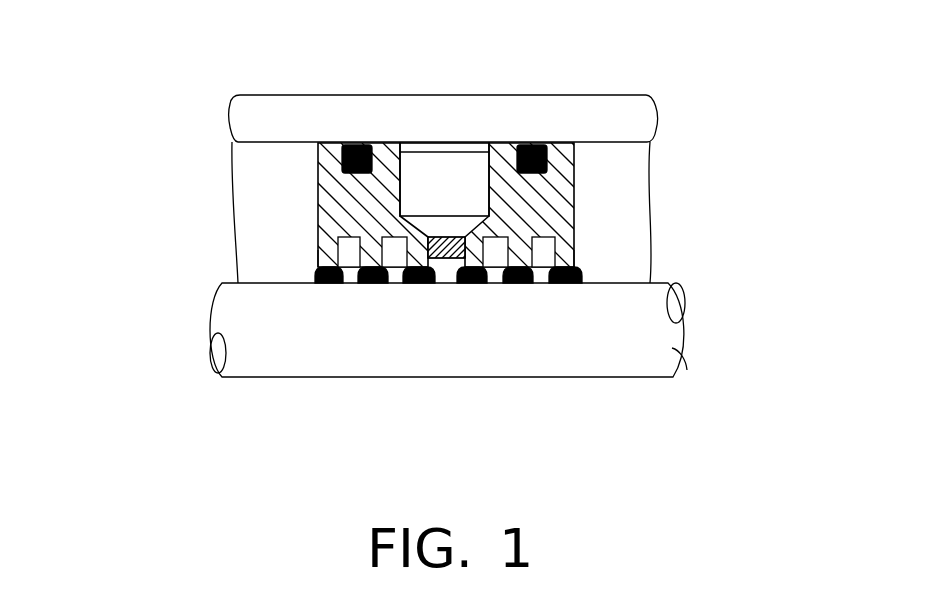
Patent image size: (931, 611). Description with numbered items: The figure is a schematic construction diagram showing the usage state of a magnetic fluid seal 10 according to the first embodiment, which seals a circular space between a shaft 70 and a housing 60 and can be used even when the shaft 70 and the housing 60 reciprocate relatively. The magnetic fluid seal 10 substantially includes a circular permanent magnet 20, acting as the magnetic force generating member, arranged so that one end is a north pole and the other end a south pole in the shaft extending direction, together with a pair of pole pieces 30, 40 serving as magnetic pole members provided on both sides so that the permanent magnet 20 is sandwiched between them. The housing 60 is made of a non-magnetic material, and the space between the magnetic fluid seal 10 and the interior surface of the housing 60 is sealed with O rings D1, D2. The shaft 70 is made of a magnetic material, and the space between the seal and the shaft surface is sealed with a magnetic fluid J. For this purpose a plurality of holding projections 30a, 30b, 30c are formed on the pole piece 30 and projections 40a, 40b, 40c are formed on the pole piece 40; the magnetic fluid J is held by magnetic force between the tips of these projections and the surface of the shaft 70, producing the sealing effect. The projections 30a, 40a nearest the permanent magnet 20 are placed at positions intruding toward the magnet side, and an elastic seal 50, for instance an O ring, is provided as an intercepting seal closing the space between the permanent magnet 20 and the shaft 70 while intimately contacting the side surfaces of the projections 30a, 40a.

The magnetic fluid seal 10 is at (262, 206).
The permanent magnet 20 is at (455, 150).
The pole piece 30 is at (320, 183).
The projection 30a is at (410, 253).
The projection 30b is at (363, 253).
The projection 30c is at (317, 258).
The pole piece 40 is at (562, 198).
The projection 40a is at (510, 250).
The projection 40b is at (553, 252).
The projection 40c is at (565, 255).
The elastic seal 50 is at (449, 262).
The housing 60 is at (613, 103).
The shaft 70 is at (668, 348).
The O ring D1 is at (363, 144).
The O ring D2 is at (537, 144).
The magnetic fluid J is at (315, 278).